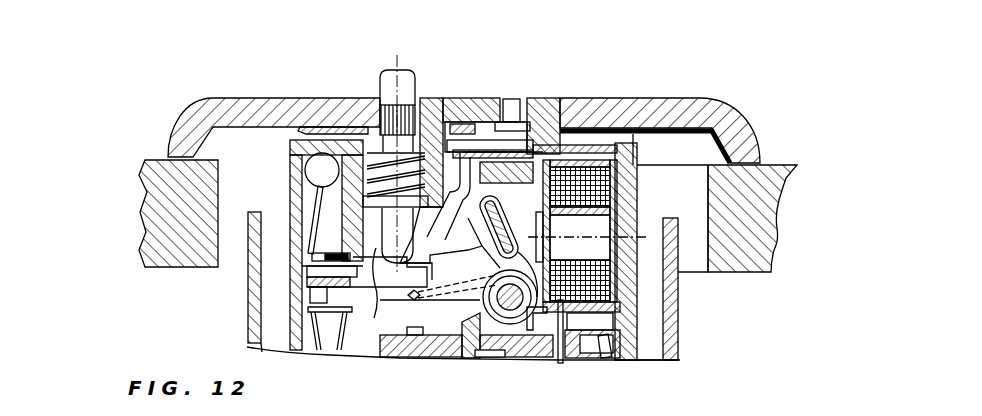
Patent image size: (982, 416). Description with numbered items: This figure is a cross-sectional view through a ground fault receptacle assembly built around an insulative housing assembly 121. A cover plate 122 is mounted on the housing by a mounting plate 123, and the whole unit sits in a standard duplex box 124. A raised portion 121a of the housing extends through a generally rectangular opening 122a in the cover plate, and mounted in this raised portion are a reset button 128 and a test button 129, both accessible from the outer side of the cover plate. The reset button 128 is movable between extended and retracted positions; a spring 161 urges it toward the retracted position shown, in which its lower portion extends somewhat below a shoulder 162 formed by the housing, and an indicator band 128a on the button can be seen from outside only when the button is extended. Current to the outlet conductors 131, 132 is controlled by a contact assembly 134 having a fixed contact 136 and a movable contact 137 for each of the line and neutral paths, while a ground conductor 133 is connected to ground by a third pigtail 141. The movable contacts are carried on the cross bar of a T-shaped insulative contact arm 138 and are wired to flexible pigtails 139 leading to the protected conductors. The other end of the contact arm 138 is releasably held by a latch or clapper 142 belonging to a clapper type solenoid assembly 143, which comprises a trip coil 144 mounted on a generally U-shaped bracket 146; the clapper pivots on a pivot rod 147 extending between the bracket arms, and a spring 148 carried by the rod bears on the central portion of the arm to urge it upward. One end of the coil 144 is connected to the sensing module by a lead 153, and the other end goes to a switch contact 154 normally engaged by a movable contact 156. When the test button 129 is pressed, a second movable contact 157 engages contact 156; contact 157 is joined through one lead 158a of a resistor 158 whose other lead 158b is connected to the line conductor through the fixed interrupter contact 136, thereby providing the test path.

The housing assembly 121 is at (286, 160).
The raised portion 121a is at (485, 98).
The cover plate 122 is at (286, 84).
The rectangular opening 122a is at (553, 103).
The mounting plate 123 is at (603, 125).
The duplex box 124 is at (672, 338).
The reset button 128 is at (402, 70).
The indicator band 128a is at (390, 105).
The test button 129 is at (531, 142).
The conductor 131 is at (446, 338).
The conductor 132 is at (520, 337).
The conductor 133 is at (597, 360).
The contact assembly 134 is at (353, 333).
The fixed contact 136 is at (318, 273).
The movable contact 137 is at (320, 297).
The contact arm 138 is at (455, 297).
The flexible pigtail 139 is at (325, 338).
The third pigtail 141 is at (618, 352).
The latch 142 is at (508, 225).
The solenoid assembly 143 is at (607, 220).
The trip coil 144 is at (610, 182).
The U-shaped bracket 146 is at (622, 297).
The pivot rod 147 is at (510, 302).
The spring 148 is at (476, 340).
The lead 153 is at (563, 360).
The switch contact 154 is at (472, 205).
The movable contact 156 is at (476, 232).
The second movable contact 157 is at (510, 122).
The resistor 158 is at (312, 175).
The resistor lead 158a is at (462, 126).
The resistor lead 158b is at (318, 232).
The spring 161 is at (405, 166).
The shoulder 162 is at (374, 290).